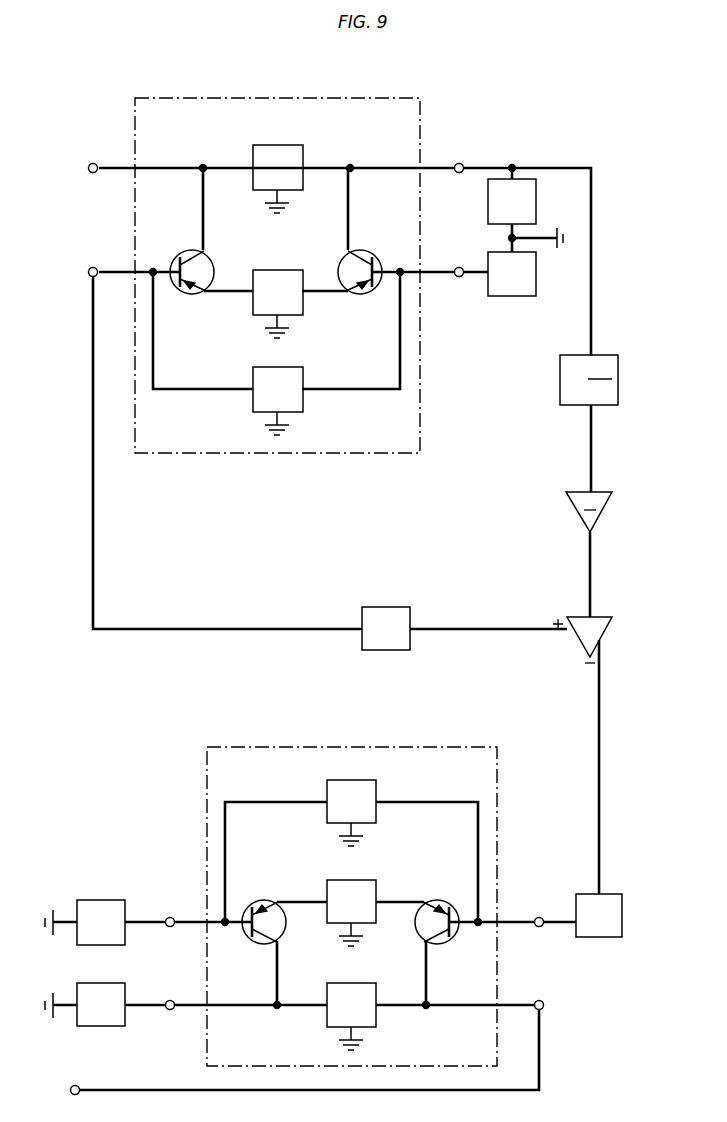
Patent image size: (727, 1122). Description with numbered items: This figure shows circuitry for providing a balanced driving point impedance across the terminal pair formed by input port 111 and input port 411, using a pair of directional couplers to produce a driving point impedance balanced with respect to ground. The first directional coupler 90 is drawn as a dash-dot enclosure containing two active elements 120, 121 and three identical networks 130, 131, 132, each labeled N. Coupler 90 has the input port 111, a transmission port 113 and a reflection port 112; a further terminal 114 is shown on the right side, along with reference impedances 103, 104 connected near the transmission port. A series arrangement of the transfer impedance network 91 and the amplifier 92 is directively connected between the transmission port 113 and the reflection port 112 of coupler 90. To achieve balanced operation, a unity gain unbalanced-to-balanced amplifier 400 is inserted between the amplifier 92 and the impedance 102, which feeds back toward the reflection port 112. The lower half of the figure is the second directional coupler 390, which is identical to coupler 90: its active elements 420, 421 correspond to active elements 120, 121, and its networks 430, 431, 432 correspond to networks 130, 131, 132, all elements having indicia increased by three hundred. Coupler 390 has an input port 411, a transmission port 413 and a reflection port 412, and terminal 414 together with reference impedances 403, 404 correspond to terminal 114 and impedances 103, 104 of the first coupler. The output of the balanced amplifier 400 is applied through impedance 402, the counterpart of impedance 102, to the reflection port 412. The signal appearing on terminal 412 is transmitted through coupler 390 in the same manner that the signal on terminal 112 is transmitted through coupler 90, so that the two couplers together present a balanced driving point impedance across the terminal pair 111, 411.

The directional coupler 90 is at (275, 98).
The input port 111 is at (337, 250).
The reflection port 112 is at (223, 438).
The transmission port 113 is at (465, 158).
The fourth terminal 114 is at (430, 262).
The active element 120 is at (208, 231).
The active element 121 is at (342, 231).
The network 130 is at (277, 146).
The network 131 is at (277, 271).
The network 132 is at (303, 376).
The reference impedance ZR 103 is at (488, 200).
The reference impedance ZR 104 is at (509, 297).
The impedance 102 is at (385, 607).
The transfer impedance network 91 is at (618, 380).
The amplifier 92 is at (606, 506).
The unity gain unbalanced-to-balanced amplifier 400 is at (596, 755).
The directional coupler 390 is at (292, 747).
The network 432 is at (364, 780).
The network 431 is at (327, 887).
The network 430 is at (327, 990).
The active element 421 is at (284, 943).
The active element 420 is at (457, 943).
The reference impedance ZR 404 is at (100, 900).
The reference impedance ZR 403 is at (100, 983).
The impedance 402 is at (622, 918).
The terminal 414 is at (148, 917).
The transmission port 413 is at (294, 1036).
The reflection port 412 is at (550, 912).
The input port 411 is at (78, 1081).